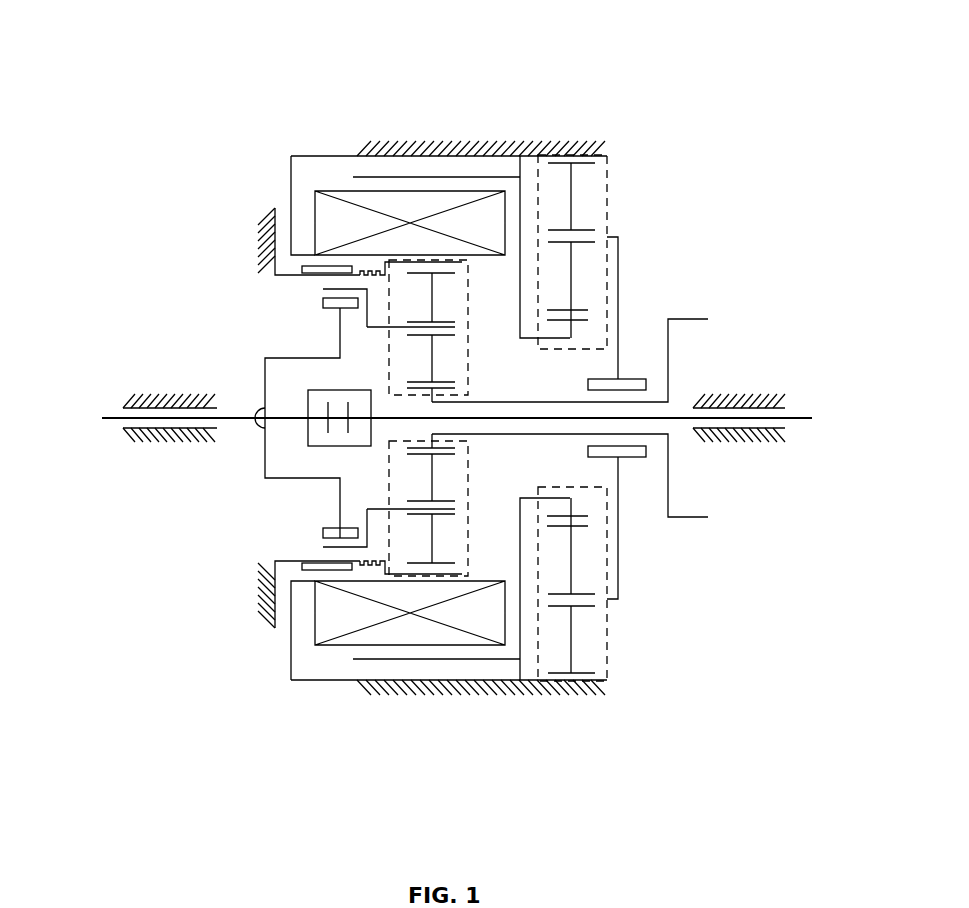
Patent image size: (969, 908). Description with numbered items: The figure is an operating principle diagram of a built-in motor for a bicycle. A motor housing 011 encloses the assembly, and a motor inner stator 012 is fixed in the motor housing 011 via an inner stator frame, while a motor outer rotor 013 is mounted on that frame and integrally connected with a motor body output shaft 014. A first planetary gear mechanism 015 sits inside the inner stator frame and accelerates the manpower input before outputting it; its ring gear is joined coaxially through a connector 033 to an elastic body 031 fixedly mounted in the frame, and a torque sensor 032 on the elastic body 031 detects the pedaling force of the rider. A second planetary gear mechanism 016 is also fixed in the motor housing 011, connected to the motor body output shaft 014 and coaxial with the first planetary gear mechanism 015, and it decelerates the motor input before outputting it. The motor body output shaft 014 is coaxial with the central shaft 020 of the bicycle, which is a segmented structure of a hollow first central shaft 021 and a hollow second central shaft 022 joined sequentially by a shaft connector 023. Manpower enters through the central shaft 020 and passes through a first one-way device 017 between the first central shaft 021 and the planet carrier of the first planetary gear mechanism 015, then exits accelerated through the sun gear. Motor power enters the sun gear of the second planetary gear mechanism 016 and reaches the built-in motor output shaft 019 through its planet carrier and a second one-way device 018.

The motor housing 011 is at (470, 156).
The motor inner stator 012 is at (338, 220).
The motor outer rotor 013 is at (484, 176).
The motor body output shaft 014 is at (585, 318).
The first planetary gear mechanism 015 is at (448, 543).
The second planetary gear mechanism 016 is at (590, 182).
The first one-way device 017 is at (338, 533).
The second one-way device 018 is at (623, 450).
The built-in motor output shaft 019 is at (683, 517).
The central shaft 020 is at (447, 512).
The first central shaft 021 is at (229, 418).
The second central shaft 022 is at (412, 416).
The shaft connector 023 is at (317, 402).
The elastic body 031 is at (295, 276).
The torque sensor 032 is at (315, 270).
The connector 033 is at (372, 563).